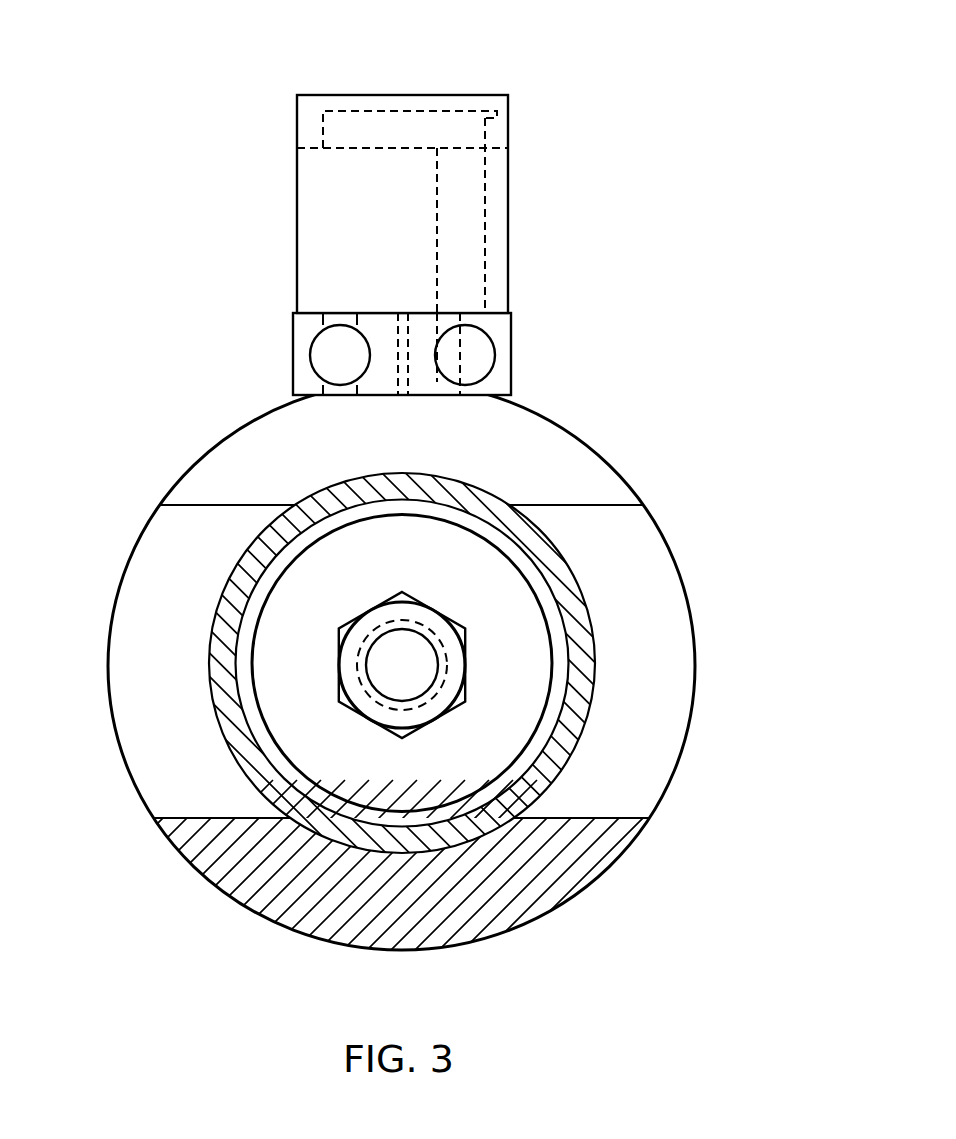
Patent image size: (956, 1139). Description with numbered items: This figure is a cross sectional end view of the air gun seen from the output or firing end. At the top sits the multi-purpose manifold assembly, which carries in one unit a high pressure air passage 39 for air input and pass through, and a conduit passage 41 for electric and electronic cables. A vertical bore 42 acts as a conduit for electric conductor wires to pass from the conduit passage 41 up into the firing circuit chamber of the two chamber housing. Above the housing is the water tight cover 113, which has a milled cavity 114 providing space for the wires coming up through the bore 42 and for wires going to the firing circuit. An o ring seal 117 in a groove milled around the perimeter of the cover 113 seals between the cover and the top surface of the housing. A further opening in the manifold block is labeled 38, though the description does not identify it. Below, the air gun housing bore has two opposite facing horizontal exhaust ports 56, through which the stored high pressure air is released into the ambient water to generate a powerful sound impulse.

The water tight cover 113 is at (320, 60).
The milled cavity 114 is at (500, 110).
The o ring seal 117 is at (508, 140).
The vertical bore 42 is at (490, 240).
The opening 38 is at (322, 323).
The high pressure air passage 39 is at (295, 374).
The conduit passage 41 is at (496, 343).
The exhaust ports 56 is at (177, 775).